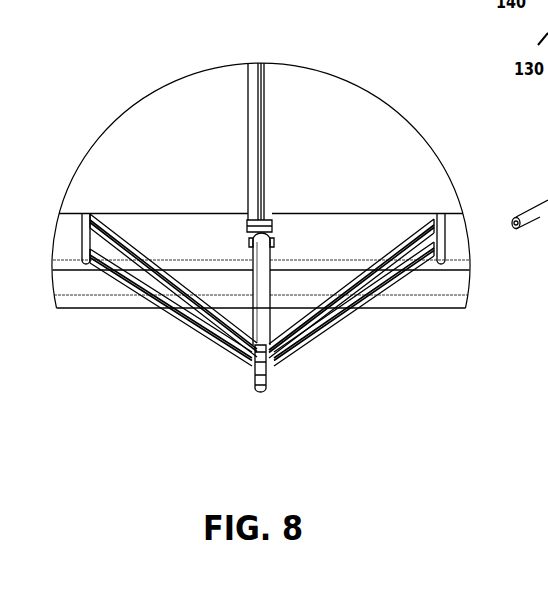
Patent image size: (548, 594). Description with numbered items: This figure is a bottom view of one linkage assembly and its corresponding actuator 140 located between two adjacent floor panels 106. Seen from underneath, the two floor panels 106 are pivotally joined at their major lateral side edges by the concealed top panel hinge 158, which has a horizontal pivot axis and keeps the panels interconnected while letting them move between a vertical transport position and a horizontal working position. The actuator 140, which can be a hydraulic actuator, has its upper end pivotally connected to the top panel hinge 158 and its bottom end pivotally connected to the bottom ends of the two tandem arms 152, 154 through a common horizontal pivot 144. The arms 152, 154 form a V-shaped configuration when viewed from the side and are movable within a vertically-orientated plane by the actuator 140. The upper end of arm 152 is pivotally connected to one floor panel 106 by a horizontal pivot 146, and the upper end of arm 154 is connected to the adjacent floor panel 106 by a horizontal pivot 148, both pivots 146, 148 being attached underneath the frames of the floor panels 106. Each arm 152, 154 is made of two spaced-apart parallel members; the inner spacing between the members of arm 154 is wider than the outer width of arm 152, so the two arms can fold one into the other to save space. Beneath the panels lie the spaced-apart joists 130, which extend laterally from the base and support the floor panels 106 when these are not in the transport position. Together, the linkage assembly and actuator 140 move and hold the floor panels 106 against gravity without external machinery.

The floor panel 106 is at (297, 93).
The joist 130 is at (448, 302).
The actuator 140 is at (262, 258).
The common horizontal pivot 144 is at (268, 372).
The horizontal pivot 146 is at (90, 234).
The horizontal pivot 148 is at (440, 236).
The tandem arm 152 is at (173, 318).
The tandem arm 154 is at (343, 327).
The top panel hinge 158 is at (265, 222).